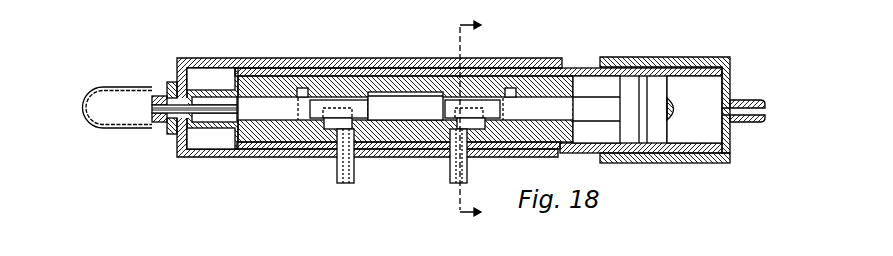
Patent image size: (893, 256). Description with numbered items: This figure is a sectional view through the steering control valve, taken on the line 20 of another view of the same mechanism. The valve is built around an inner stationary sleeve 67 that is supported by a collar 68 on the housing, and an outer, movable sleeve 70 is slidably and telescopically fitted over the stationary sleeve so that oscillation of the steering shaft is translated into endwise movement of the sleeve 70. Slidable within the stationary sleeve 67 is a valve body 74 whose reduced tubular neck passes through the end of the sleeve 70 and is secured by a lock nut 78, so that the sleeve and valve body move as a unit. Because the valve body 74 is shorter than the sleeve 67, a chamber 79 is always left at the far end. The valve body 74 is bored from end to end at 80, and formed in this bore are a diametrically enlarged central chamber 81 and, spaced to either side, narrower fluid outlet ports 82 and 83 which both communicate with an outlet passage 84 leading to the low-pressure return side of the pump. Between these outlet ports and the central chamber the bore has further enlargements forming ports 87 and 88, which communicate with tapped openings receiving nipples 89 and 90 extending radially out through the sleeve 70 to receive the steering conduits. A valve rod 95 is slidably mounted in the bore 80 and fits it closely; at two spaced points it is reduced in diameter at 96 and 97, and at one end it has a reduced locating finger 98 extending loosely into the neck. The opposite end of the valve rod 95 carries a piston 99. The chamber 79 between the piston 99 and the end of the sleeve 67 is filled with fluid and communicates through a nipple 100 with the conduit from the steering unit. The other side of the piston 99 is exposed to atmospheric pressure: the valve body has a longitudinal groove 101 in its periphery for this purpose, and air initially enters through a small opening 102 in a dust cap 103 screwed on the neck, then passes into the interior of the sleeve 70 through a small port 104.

The line 20— 20 is at (466, 120).
The stationary sleeve 67 is at (594, 57).
The collar 68 is at (714, 163).
The outer movable sleeve 70 is at (220, 58).
The valve body 74 is at (228, 148).
The lock nut 78 is at (168, 128).
The chamber 79 is at (698, 80).
The bore 80 is at (567, 70).
The central chamber 81 is at (402, 92).
The fluid outlet port 82 is at (304, 88).
The fluid outlet port 83 is at (512, 89).
The outlet passage 84 is at (392, 150).
The port 87 is at (332, 128).
The port 88 is at (472, 128).
The nipple 89 is at (343, 183).
The nipple 90 is at (455, 183).
The valve rod 95 is at (538, 109).
The reduced diameter portion 96 is at (340, 99).
The reduced diameter portion 97 is at (478, 99).
The locating finger 98 is at (152, 108).
The piston 99 is at (622, 127).
The nipple 100 is at (756, 100).
The longitudinal groove 101 is at (370, 70).
The small opening 102 is at (84, 103).
The dust cap 103 is at (103, 126).
The small port 104 is at (232, 147).